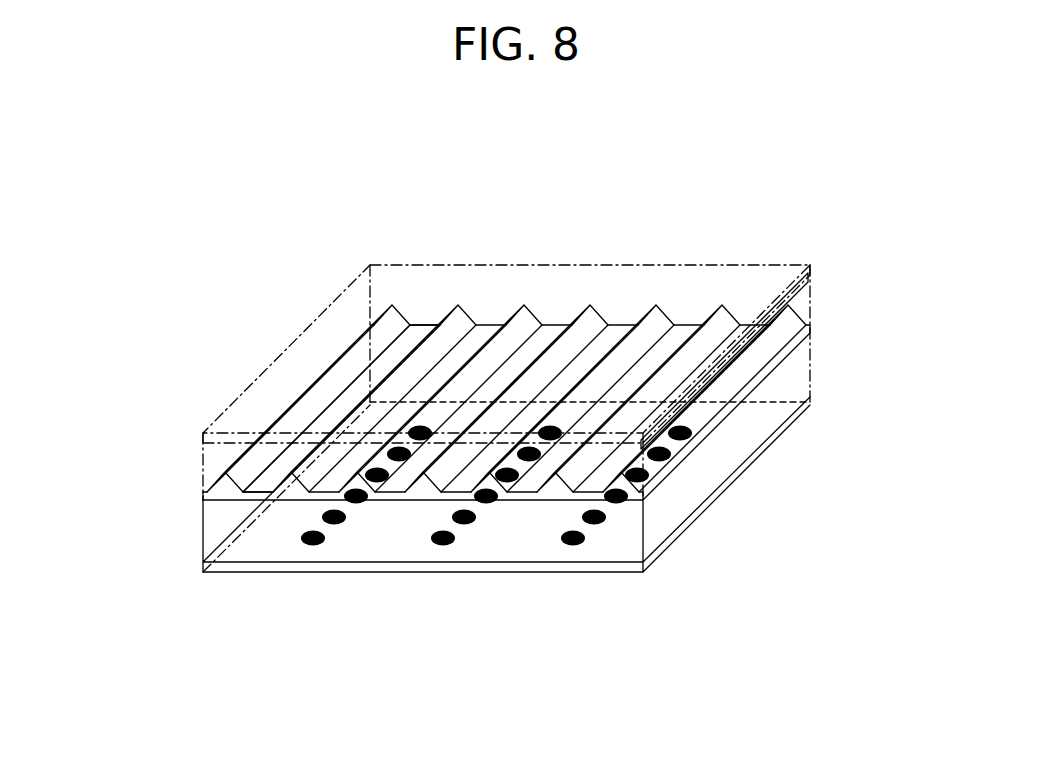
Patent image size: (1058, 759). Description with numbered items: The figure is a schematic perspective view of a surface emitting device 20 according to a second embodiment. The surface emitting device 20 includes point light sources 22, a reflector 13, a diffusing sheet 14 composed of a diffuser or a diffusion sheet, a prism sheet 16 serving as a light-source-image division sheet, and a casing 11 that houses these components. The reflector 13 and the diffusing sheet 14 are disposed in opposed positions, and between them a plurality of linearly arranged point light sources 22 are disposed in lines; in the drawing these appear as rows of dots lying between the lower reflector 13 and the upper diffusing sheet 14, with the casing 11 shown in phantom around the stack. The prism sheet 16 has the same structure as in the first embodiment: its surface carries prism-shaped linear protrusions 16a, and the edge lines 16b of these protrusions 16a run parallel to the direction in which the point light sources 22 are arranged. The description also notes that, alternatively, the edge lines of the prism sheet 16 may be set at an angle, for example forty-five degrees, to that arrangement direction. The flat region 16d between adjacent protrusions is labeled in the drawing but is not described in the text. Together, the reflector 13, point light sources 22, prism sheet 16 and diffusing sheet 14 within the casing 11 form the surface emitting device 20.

The casing 11 is at (817, 313).
The reflector 13 is at (667, 507).
The diffusing sheet 14 is at (705, 263).
The prism sheet 16 is at (510, 312).
The prism-shaped linear protrusions 16a is at (528, 323).
The edge lines 16b is at (647, 312).
The flat portion between ridges 16d is at (422, 325).
The surface emitting device 20 is at (245, 680).
The point light sources 22 is at (588, 628).